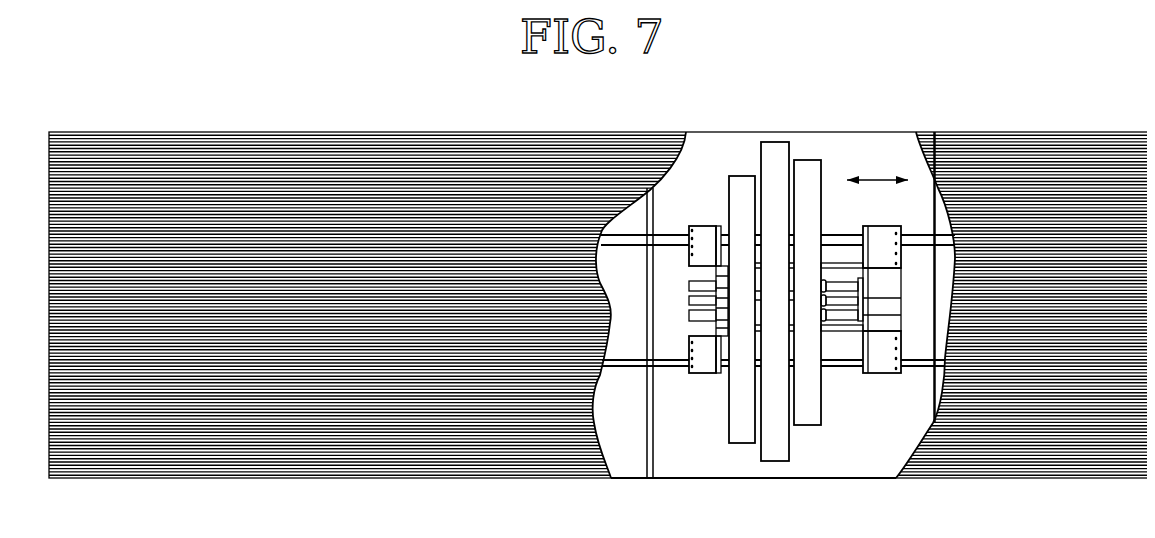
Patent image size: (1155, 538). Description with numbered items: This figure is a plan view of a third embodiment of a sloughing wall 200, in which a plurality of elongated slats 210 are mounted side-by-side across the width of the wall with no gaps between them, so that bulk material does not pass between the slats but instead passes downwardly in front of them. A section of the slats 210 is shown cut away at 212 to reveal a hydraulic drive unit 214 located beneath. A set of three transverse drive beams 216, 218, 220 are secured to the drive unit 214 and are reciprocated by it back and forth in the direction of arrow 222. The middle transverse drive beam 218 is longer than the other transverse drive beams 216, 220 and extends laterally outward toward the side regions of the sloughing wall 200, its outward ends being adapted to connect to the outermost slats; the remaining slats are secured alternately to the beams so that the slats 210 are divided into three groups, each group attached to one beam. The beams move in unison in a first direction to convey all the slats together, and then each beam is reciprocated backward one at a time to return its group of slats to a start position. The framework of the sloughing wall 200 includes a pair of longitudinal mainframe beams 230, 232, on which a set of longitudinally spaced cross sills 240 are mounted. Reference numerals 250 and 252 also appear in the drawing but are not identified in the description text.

The sloughing wall 200 is at (355, 90).
The elongated slats 210 is at (41, 185).
The cut away 212 is at (815, 110).
The hydraulic drive unit 214 is at (855, 425).
The transverse drive beam 216 is at (733, 425).
The transverse drive beam 218 is at (770, 442).
The transverse drive beam 220 is at (805, 413).
The arrow 222 is at (873, 172).
The longitudinal mainframe beam 230 is at (623, 352).
The longitudinal mainframe beam 232 is at (628, 226).
The cross sills 240 is at (642, 443).
The first section 250 is at (309, 537).
The second section 252 is at (517, 537).